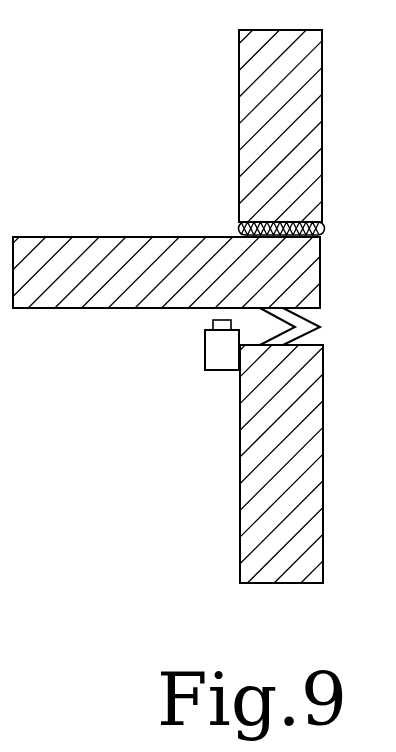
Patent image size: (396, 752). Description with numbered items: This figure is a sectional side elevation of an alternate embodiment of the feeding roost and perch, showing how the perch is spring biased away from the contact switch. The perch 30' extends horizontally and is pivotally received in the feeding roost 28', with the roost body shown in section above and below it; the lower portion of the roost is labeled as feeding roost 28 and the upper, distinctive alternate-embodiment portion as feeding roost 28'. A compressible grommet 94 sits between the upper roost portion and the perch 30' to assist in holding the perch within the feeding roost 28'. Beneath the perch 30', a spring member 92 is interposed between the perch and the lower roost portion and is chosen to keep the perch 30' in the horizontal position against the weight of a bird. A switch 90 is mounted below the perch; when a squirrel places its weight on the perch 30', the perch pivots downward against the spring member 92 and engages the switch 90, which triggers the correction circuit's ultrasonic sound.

The feeding roost 28 is at (313, 464).
The feeding roost 28' is at (315, 126).
The perch 30' is at (166, 238).
The switch 90 is at (213, 324).
The spring member 92 is at (306, 316).
The compressible grommet 94 is at (322, 225).